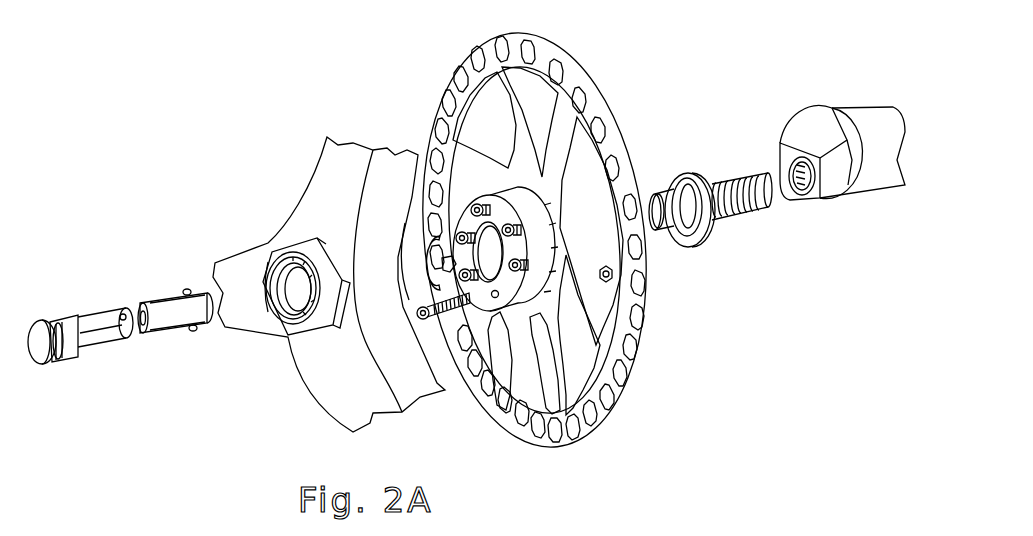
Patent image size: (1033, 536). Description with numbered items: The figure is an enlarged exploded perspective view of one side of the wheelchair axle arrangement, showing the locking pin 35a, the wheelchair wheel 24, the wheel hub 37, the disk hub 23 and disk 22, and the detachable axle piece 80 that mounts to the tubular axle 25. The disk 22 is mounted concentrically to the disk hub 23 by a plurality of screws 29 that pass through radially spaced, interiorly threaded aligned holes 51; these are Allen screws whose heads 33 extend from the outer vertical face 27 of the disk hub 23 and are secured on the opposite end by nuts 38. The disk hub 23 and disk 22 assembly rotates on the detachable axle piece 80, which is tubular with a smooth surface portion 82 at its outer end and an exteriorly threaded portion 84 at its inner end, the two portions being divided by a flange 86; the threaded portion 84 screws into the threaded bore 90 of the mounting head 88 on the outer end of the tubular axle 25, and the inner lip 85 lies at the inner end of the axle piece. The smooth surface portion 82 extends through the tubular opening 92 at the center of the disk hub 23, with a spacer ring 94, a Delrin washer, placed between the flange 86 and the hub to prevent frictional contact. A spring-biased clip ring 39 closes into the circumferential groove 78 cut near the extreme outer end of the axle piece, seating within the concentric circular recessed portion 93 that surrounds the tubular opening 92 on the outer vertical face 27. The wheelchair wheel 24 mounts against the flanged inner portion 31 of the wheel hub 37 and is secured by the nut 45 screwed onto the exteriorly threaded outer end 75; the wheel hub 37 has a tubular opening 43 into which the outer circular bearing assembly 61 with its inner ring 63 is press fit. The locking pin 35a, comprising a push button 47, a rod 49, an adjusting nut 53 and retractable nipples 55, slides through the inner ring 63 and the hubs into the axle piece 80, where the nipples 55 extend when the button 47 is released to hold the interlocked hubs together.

The disk 22 is at (583, 81).
The disk hub 23 is at (532, 248).
The wheelchair wheel 24 is at (326, 202).
The tubular axle 25 is at (847, 115).
The outer vertical face 27 is at (525, 322).
The screw 29 is at (427, 322).
The flanged inner portion 31 is at (404, 252).
The head 33 is at (476, 203).
The locking pin 35a is at (84, 279).
The wheel hub 37 is at (268, 283).
The nut 38 is at (600, 278).
The clip ring 39 is at (428, 283).
The tubular opening 43 is at (292, 300).
The nut 45 is at (332, 318).
The push button 47 is at (38, 364).
The rod 49 is at (92, 317).
The hole 51 is at (487, 297).
The adjusting nut 53 is at (66, 359).
The retractable nipple 55 is at (186, 290).
The outer circular bearing assembly 61 is at (290, 318).
The inner ring 63 is at (281, 268).
The exteriorly threaded outer end 75 is at (293, 256).
The circumferential groove 78 is at (688, 247).
The detachable axle piece 80 is at (701, 126).
The smooth surface portion 82 is at (694, 228).
The exteriorly threaded portion 84 is at (745, 209).
The inner lip 85 is at (768, 176).
The flange 86 is at (691, 173).
The mounting head 88 is at (828, 182).
The threaded bore 90 is at (802, 195).
The tubular opening 92 is at (484, 259).
The concentric circular recessed portion 93 is at (463, 232).
The spacer ring 94 is at (677, 178).